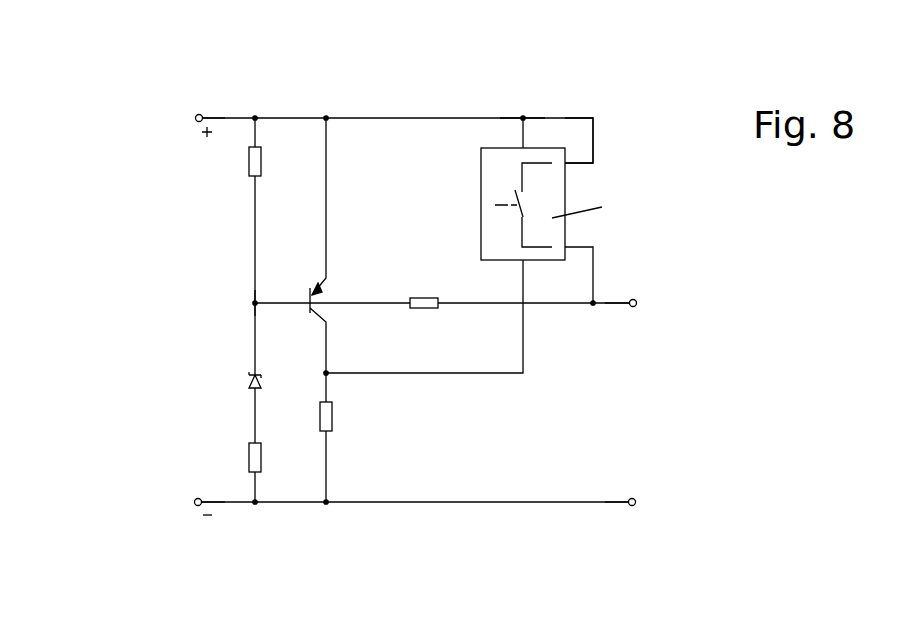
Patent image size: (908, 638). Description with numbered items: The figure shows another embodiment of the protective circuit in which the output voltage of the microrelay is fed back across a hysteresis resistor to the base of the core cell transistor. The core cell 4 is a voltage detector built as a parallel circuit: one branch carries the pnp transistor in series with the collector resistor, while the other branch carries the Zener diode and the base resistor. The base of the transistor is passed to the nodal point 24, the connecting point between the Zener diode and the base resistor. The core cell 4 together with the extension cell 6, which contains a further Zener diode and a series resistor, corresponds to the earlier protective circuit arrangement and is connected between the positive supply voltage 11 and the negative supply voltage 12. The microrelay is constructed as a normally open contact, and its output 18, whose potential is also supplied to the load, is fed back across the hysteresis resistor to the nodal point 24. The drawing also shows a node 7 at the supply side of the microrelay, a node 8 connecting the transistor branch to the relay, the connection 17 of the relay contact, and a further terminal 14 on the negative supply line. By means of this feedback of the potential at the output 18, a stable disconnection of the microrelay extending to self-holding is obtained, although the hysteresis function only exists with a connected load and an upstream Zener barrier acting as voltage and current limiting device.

The core cell 4 is at (200, 247).
The extension cell 6 is at (198, 458).
The supply node to relay MR1 7 is at (522, 98).
The node connecting transistor T1 to relay coil 8 is at (426, 336).
The positive supply voltage 11 is at (188, 130).
The negative supply voltage 12 is at (187, 514).
The output terminal 14 is at (643, 513).
The relay contact connection line 17 is at (603, 140).
The output of microrelay 18 is at (644, 314).
The nodal point 24 is at (231, 303).